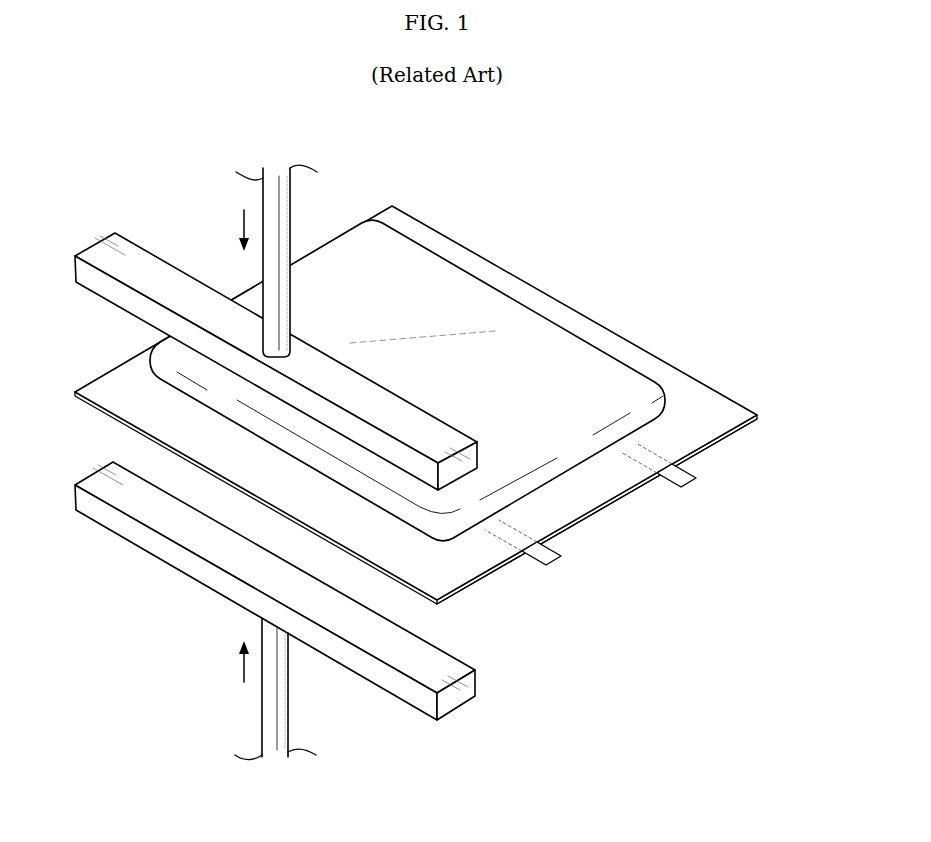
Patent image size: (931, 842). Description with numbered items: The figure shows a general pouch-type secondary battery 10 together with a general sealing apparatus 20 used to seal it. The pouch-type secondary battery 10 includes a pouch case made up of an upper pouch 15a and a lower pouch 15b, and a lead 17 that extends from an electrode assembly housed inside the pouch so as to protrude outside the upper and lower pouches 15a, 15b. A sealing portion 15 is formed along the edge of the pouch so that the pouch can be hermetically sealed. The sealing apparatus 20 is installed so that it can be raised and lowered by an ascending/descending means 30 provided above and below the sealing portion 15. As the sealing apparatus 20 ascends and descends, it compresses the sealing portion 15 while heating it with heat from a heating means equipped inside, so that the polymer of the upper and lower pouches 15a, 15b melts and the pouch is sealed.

The pouch-type secondary battery 10 is at (438, 392).
The sealing portion 15 is at (438, 418).
The upper pouch 15a is at (693, 392).
The lower pouch 15b is at (735, 437).
The lead 17 is at (686, 484).
The sealing apparatus 20 is at (139, 257).
The ascending/descending means 30 is at (284, 200).